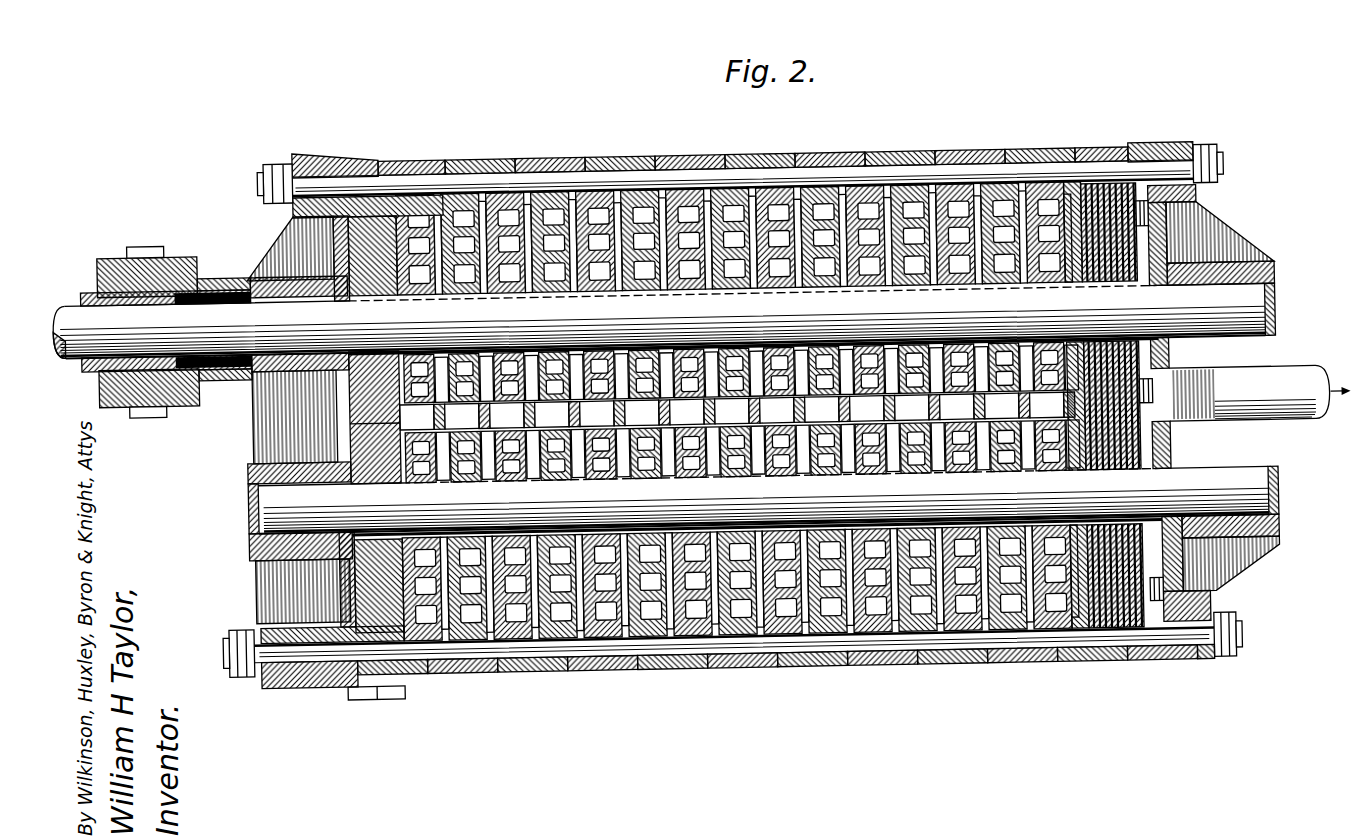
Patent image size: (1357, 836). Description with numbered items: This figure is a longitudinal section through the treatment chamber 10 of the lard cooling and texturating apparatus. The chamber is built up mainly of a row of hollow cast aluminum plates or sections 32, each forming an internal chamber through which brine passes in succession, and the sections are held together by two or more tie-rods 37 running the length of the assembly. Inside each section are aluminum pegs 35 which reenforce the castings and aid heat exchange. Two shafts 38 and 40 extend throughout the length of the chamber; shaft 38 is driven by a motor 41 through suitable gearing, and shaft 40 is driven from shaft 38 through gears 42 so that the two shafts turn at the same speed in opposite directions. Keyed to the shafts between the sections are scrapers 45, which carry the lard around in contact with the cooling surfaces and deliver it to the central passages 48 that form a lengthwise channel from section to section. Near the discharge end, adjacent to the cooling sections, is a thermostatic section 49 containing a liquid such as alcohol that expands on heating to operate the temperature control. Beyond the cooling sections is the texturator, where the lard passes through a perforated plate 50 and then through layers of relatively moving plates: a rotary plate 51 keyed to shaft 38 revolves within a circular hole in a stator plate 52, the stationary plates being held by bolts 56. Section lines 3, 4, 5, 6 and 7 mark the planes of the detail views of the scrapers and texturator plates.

The section line 3- 3 is at (533, 702).
The section line 4- 4 is at (1085, 690).
The section line 5- 5 is at (1094, 730).
The section line 6- 6 is at (1150, 745).
The section line 7- 7 is at (1110, 785).
The treatment chamber 10 is at (352, 150).
The plates or sections 32 is at (429, 157).
The aluminum pegs 35 is at (860, 190).
The tie-rods 37 is at (902, 158).
The shaft 38 is at (1262, 311).
The shaft 40 is at (1264, 498).
The motor 41 is at (386, 235).
The gears 42 is at (348, 430).
The scrapers 45 is at (410, 632).
The passages 48 is at (318, 507).
The thermostatic section 49 is at (980, 158).
The perforated plate 50 is at (1058, 650).
The rotary plate 51 is at (1142, 250).
The stator plate 52 is at (1117, 195).
The bolts 56 is at (1160, 602).